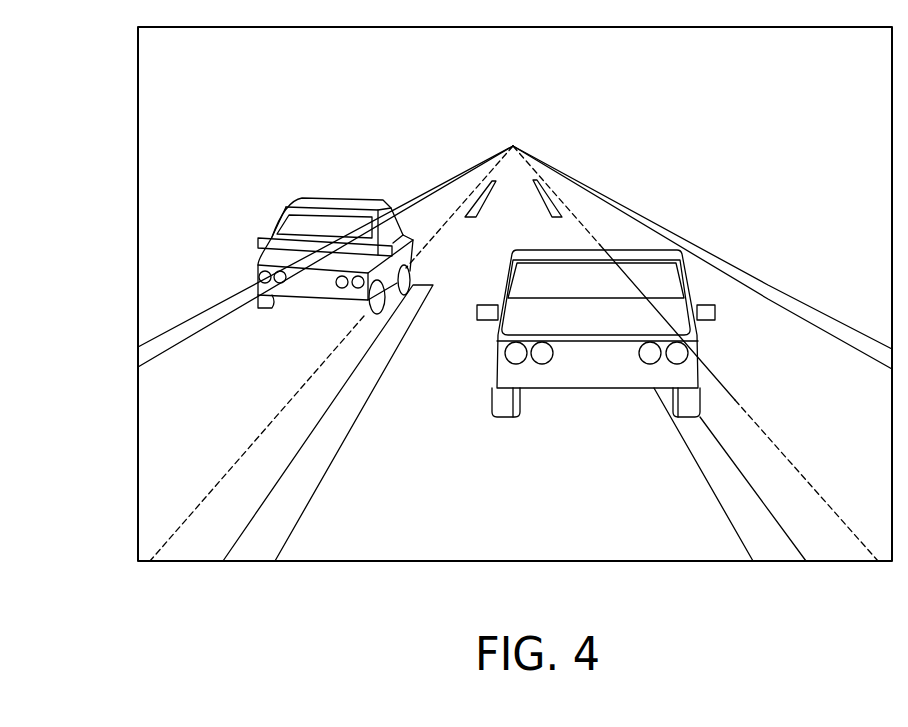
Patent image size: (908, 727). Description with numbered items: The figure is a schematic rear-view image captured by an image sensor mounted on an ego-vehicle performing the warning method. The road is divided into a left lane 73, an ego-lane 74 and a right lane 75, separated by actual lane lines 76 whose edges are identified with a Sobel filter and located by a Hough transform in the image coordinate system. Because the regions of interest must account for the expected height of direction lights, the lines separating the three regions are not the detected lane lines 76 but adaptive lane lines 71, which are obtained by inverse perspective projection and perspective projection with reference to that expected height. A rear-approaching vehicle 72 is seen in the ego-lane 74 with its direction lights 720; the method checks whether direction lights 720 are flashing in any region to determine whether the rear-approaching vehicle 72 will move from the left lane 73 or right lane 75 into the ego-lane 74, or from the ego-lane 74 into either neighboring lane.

The adaptive lane line 71 is at (263, 432).
The rear-approaching vehicle 72 is at (568, 333).
The direction light 720 is at (512, 352).
The left lane 73 is at (768, 323).
The ego-lane 74 is at (510, 527).
The right lane 75 is at (167, 444).
The lane line 76 is at (772, 545).